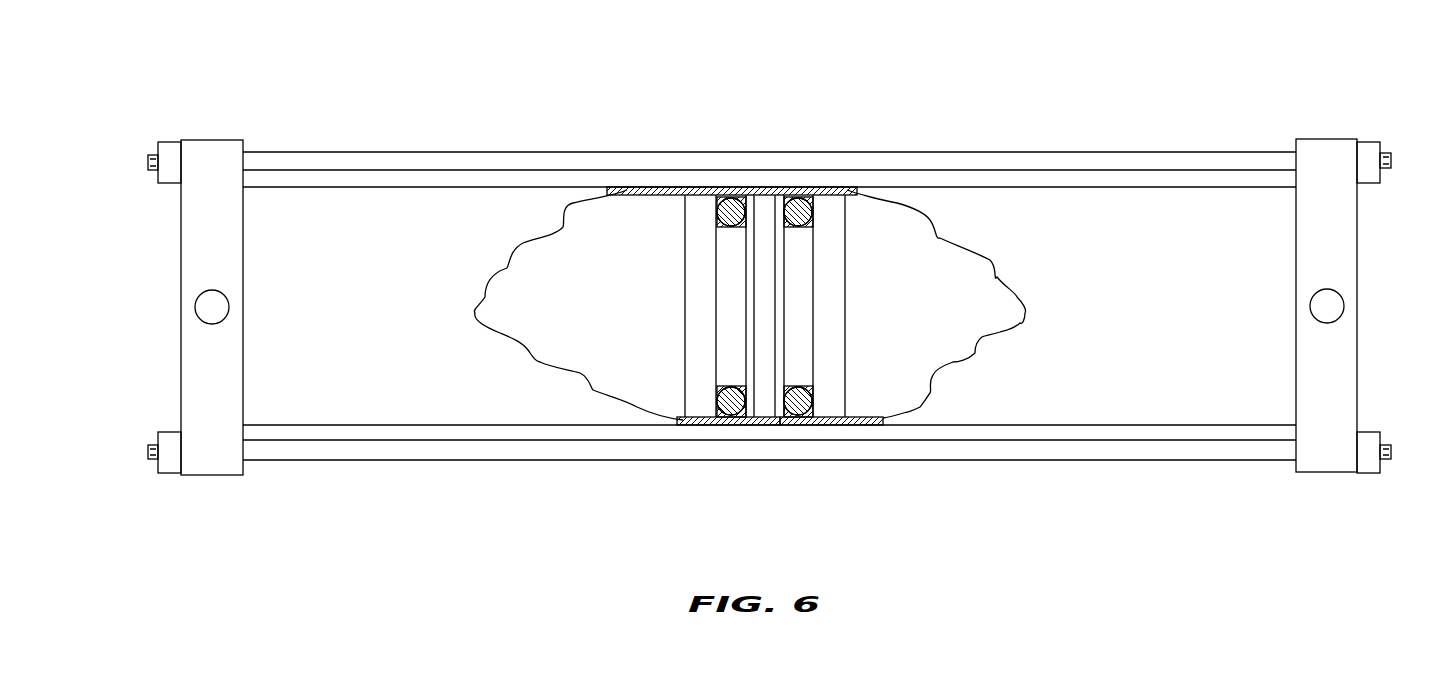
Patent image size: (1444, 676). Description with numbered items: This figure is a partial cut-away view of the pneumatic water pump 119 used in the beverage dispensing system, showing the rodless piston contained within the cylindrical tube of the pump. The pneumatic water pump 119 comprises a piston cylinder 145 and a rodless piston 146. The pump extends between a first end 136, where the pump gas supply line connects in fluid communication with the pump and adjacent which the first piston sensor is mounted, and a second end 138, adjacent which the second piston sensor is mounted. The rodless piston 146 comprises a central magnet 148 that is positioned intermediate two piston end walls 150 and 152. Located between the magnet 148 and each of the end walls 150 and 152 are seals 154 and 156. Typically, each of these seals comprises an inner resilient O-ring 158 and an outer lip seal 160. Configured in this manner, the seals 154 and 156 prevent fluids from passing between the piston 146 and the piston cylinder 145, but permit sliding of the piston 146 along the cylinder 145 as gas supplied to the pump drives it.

The pneumatic water pump 119 is at (1032, 97).
The first end 136 is at (158, 225).
The second end 138 is at (1392, 222).
The piston cylinder 145 is at (1095, 400).
The rodless piston 146 is at (908, 282).
The central magnet 148 is at (763, 400).
The first piston end wall 150 is at (699, 400).
The second piston end wall 152 is at (833, 400).
The first seal 154 is at (728, 427).
The second seal 156 is at (798, 427).
The inner resilient O-ring 158 is at (722, 200).
The outer lip seal 160 is at (730, 202).